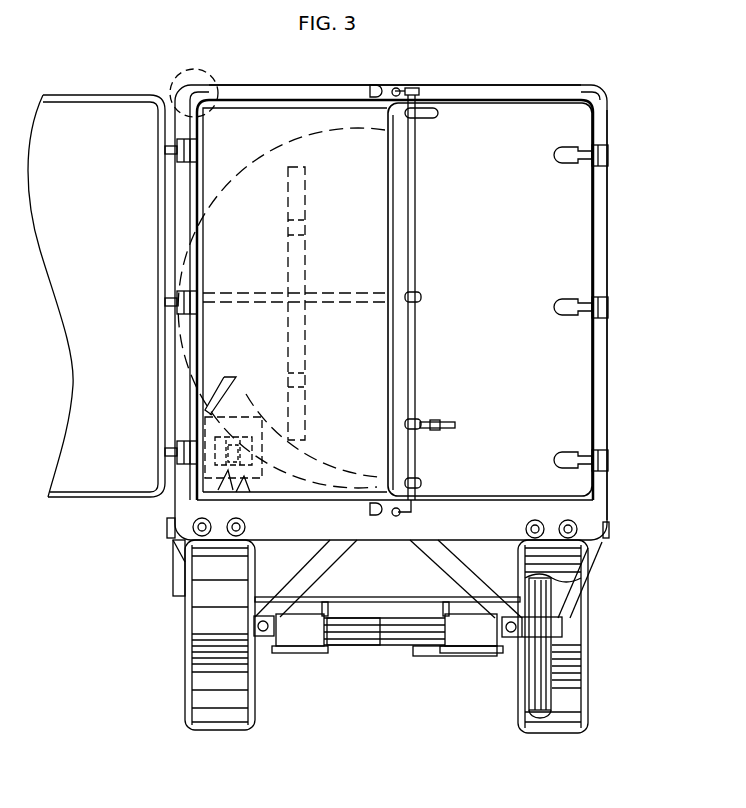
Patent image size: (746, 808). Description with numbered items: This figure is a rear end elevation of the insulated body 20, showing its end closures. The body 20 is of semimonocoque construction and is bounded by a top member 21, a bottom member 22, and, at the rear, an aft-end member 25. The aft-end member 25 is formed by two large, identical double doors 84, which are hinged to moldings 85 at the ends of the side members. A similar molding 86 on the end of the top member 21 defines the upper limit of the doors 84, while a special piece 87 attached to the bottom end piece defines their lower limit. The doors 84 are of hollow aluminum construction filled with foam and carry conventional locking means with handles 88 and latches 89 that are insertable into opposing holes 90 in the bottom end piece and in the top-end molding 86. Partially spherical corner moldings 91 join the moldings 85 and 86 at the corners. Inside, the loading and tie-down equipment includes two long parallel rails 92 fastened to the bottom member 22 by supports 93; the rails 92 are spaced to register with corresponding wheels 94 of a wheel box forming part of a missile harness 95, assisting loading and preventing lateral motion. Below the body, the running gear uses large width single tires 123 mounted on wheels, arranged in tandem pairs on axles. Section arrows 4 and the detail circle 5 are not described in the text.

The section line of FIG. 4 is at (242, 57).
The detail area of FIG. 5 is at (190, 70).
The insulated body 20 is at (613, 213).
The top member 21 is at (468, 88).
The bottom member 22 is at (308, 541).
The aft-end member 25 is at (610, 282).
The double doors 84 is at (102, 154).
The moldings 85 is at (188, 226).
The molding 86 is at (511, 96).
The special piece 87 is at (470, 512).
The handles 88 is at (452, 424).
The latches 89 is at (412, 90).
The holes 90 is at (374, 86).
The corner moldings 91 is at (181, 93).
The rails 92 is at (238, 477).
The supports 93 is at (244, 490).
The wheels 94 is at (240, 456).
The harness 95 is at (239, 398).
The tires 123 is at (585, 712).